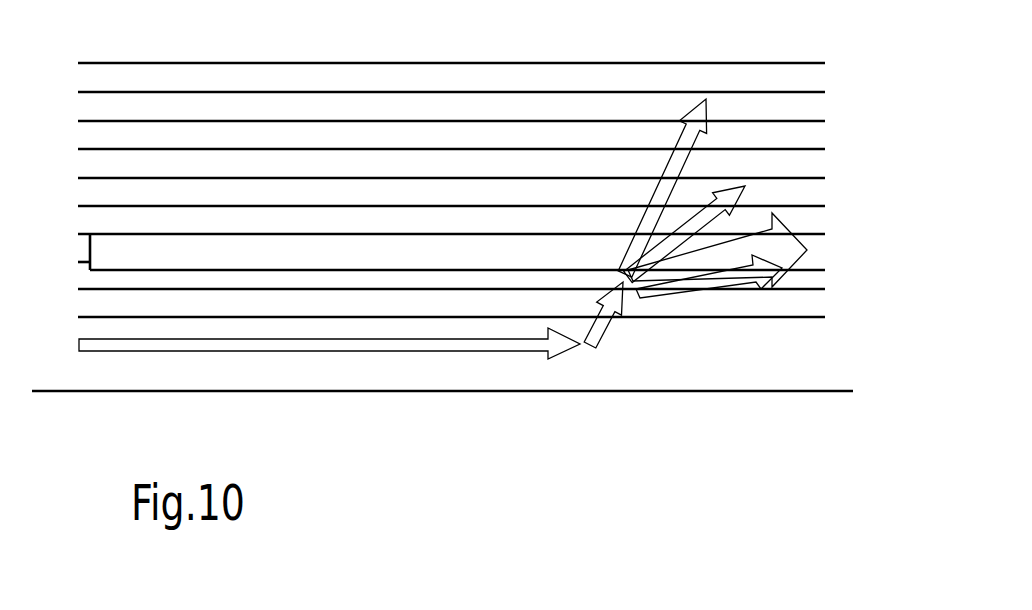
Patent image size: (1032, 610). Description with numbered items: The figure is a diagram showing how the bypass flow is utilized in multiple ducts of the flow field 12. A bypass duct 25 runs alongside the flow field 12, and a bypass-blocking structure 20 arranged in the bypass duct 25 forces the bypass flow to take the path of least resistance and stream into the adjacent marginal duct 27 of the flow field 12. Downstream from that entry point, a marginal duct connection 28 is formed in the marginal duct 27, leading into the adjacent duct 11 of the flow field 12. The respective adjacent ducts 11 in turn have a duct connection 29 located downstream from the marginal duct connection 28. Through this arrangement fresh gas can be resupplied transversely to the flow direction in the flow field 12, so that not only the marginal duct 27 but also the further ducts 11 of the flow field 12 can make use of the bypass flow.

The duct 11 is at (815, 110).
The flow field 12 is at (745, 97).
The bypass-blocking structure 20 is at (600, 346).
The bypass duct 25 is at (803, 350).
The marginal duct 27 is at (117, 300).
The marginal duct connection 28 is at (715, 279).
The duct connection 29 is at (688, 168).